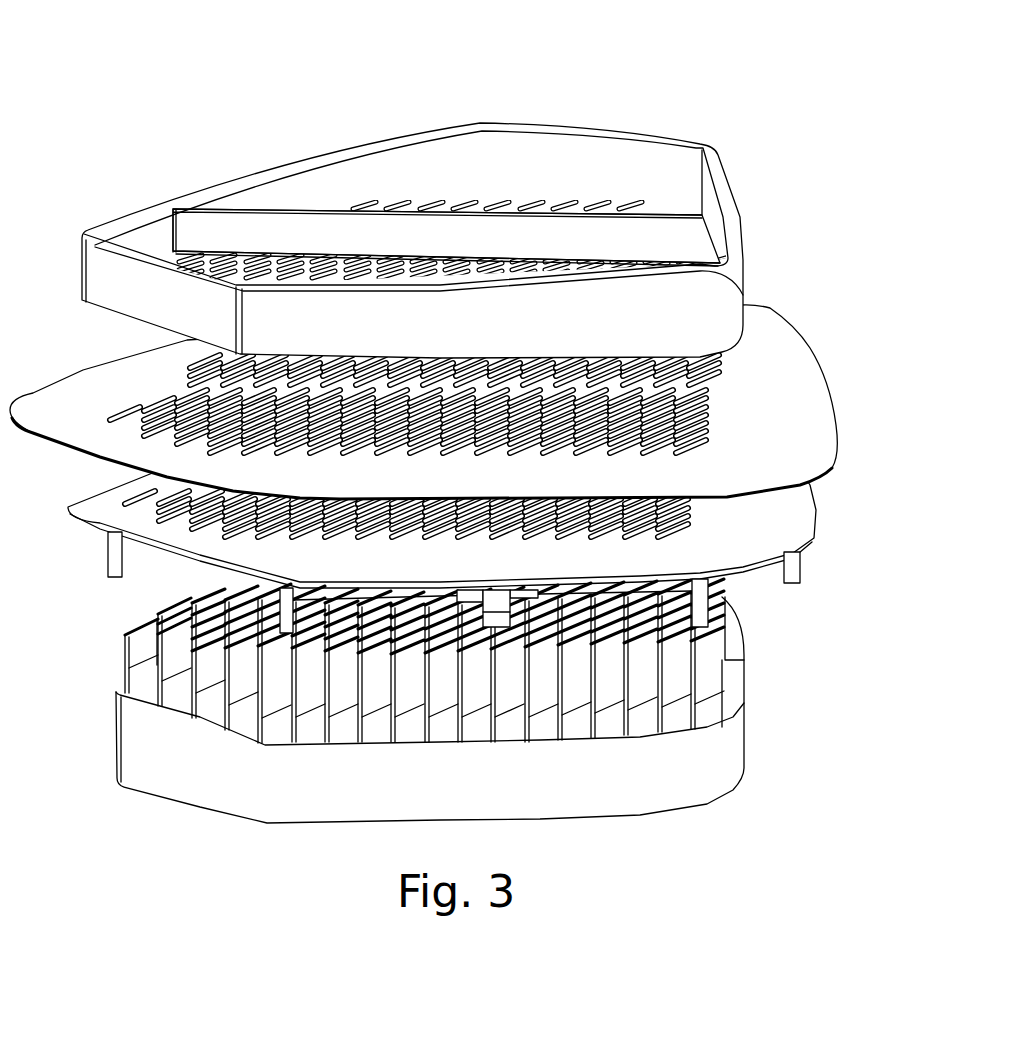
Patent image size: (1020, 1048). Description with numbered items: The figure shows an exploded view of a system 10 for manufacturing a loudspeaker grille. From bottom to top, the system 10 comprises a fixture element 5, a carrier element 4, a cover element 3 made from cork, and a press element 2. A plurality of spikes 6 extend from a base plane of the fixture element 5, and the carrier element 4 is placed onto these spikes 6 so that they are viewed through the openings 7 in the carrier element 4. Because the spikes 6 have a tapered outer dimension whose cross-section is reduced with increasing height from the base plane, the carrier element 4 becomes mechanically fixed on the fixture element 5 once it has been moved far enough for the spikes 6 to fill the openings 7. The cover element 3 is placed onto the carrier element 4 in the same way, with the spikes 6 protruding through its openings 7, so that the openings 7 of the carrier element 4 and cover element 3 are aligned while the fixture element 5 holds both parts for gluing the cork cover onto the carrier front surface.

The system 10 is at (520, 88).
The press element 2 is at (770, 232).
The cover element 3 is at (460, 402).
The carrier element 4 is at (823, 521).
The fixture element 5 is at (822, 712).
The spikes 6 is at (112, 649).
The openings 7 is at (117, 496).